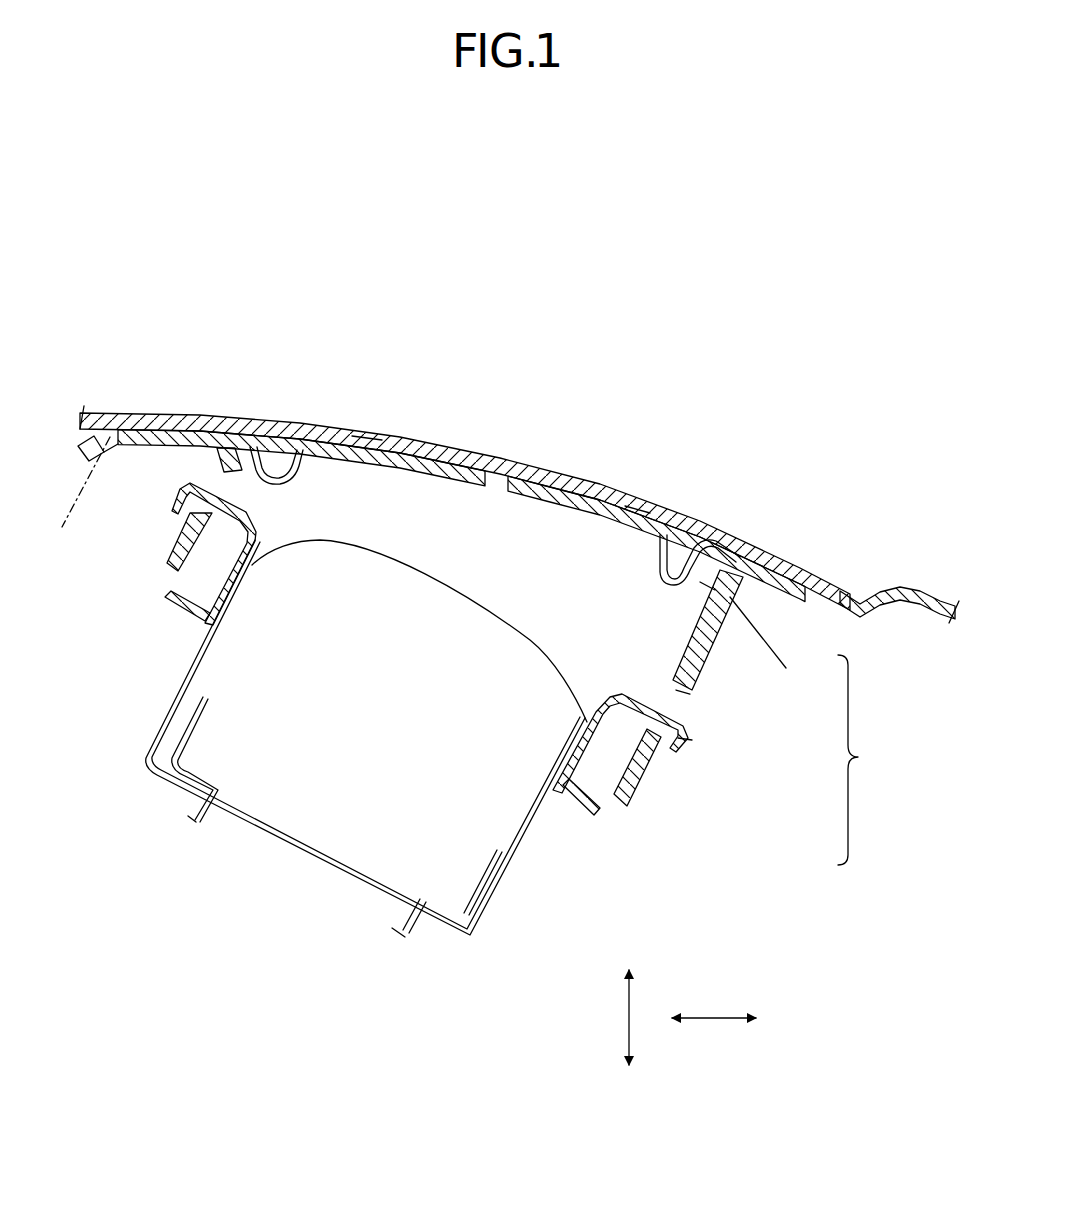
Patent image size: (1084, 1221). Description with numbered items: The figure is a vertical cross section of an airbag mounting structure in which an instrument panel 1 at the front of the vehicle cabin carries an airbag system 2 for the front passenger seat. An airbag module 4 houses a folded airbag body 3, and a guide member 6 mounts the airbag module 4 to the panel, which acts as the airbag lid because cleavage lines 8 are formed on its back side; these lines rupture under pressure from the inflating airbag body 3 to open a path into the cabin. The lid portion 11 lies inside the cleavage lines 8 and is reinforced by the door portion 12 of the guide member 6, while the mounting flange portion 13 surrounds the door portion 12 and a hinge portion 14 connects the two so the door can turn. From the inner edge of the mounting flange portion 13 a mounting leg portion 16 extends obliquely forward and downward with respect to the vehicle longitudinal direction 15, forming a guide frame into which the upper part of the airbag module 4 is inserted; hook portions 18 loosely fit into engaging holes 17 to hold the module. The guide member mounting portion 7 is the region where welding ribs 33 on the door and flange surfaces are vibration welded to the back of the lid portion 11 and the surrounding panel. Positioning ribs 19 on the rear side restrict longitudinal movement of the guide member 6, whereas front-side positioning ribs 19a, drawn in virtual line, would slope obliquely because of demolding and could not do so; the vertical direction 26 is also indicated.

The instrument panel 1 is at (108, 413).
The airbag system 2 is at (746, 948).
The airbag body 3 is at (493, 602).
The airbag module 4 is at (497, 913).
The guide member 6 is at (859, 760).
The guide member mounting portion 7 is at (126, 574).
The cleavage lines 8 is at (245, 418).
The lid portion 11 is at (366, 430).
The door portion 12 is at (690, 688).
The mounting flange portion 13 is at (767, 578).
The hinge portion 14 is at (688, 576).
The vehicle longitudinal direction 15 is at (710, 1020).
The mounting leg portion 16 is at (683, 692).
The engaging holes 17 is at (688, 738).
The hook portions 18 is at (681, 692).
The positioning ribs 19 is at (883, 592).
The positioning ribs 19a is at (74, 499).
The vertical direction 26 is at (628, 1018).
The welding ribs 33 is at (148, 418).